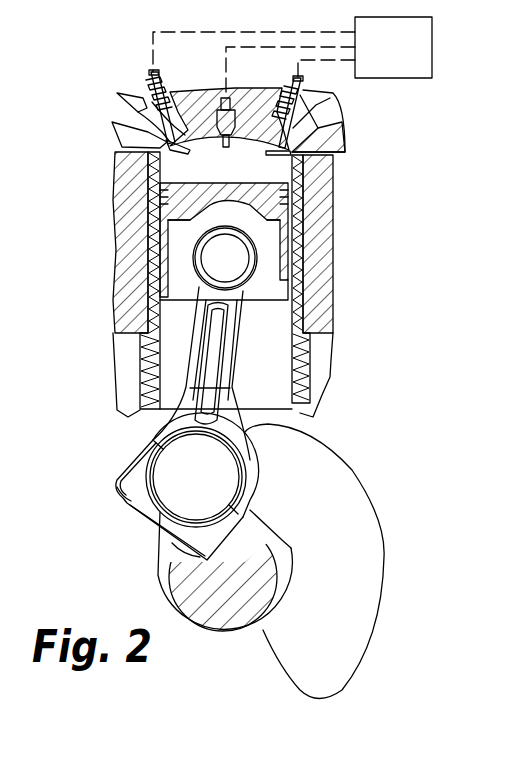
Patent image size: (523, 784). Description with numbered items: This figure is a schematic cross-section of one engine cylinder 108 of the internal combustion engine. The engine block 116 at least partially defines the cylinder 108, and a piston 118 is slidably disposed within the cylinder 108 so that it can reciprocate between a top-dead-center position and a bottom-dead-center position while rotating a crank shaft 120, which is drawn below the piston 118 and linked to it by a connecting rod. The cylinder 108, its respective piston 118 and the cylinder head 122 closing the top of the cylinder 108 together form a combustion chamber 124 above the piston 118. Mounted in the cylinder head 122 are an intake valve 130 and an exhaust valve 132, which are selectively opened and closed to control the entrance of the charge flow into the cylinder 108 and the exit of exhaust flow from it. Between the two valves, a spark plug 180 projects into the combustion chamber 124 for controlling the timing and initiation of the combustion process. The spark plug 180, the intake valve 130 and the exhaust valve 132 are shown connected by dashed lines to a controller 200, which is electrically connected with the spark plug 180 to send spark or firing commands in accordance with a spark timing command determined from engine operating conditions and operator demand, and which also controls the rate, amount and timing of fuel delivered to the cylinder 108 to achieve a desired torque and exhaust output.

The cylinder 108 is at (104, 122).
The engine block 116 is at (313, 275).
The piston 118 is at (116, 185).
The crank shaft 120 is at (247, 580).
The cylinder head 122 is at (325, 132).
The combustion chamber 124 is at (290, 172).
The intake valve 130 is at (143, 92).
The exhaust valve 132 is at (310, 104).
The spark plug 180 is at (217, 115).
The controller 200 is at (410, 60).